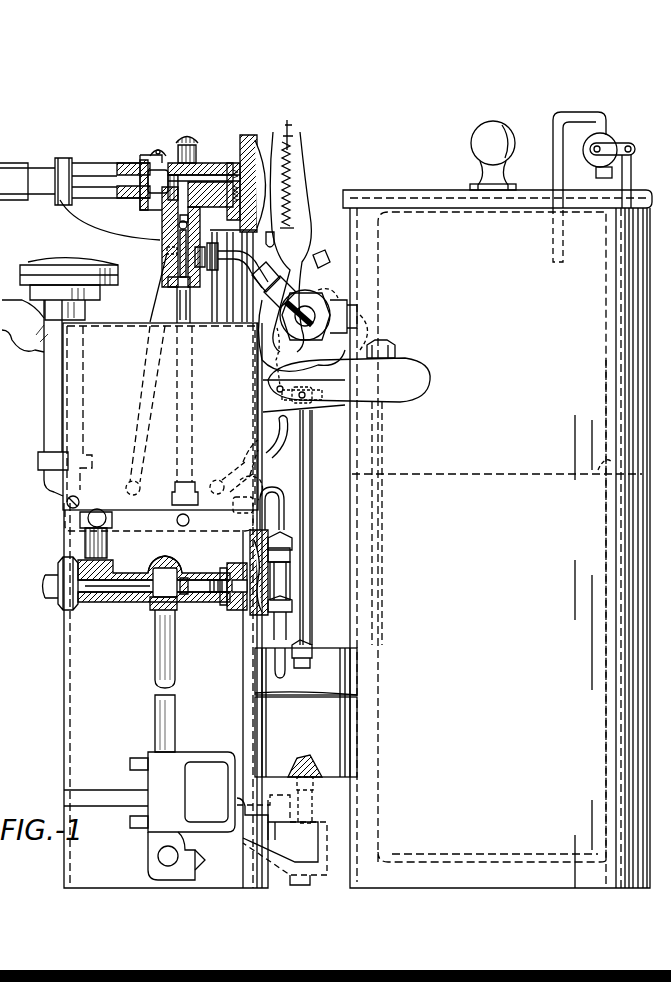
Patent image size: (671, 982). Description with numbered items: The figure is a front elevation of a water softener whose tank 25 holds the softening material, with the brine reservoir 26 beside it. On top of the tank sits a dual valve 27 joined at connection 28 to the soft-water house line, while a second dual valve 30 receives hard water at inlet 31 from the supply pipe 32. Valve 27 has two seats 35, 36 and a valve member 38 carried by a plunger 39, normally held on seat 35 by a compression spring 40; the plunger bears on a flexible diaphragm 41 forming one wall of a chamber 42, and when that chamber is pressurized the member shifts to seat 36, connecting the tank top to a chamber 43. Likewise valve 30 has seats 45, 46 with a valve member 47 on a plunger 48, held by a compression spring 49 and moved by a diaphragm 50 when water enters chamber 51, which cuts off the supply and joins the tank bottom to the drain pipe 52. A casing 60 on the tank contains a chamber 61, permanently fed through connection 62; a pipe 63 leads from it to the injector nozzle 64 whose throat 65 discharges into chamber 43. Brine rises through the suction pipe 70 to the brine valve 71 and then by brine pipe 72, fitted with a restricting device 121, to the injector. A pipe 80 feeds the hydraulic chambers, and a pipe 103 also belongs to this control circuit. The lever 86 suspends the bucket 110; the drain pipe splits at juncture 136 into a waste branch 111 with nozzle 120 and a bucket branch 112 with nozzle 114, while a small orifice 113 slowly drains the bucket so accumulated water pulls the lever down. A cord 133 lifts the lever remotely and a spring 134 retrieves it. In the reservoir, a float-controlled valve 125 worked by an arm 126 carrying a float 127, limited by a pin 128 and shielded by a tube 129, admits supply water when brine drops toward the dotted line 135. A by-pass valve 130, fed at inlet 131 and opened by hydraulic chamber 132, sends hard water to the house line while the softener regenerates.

The tank 25 is at (70, 650).
The reservoir 26 is at (385, 215).
The dual valve 27 is at (101, 168).
The connection 28 is at (56, 170).
The dual valve 30 is at (120, 602).
The hard water inlet 31 is at (88, 602).
The supply pipe 32 is at (598, 178).
The valve seat 35 is at (155, 198).
The valve seat 36 is at (136, 205).
The valve member 38 is at (158, 150).
The plunger 39 is at (205, 175).
The compression spring 40 is at (232, 205).
The flexible diaphragm 41 is at (252, 196).
The chamber 42 is at (274, 145).
The chamber 43 is at (182, 190).
The valve seat 45 is at (163, 674).
The valve seat 46 is at (152, 578).
The valve member 47 is at (180, 556).
The plunger 48 is at (212, 602).
The compression spring 49 is at (222, 578).
The diaphragm 50 is at (268, 538).
The chamber 51 is at (292, 552).
The drain pipe 52 is at (186, 578).
The casing 60 is at (75, 396).
The chamber 61 is at (70, 507).
The connection 62 is at (84, 548).
The pipe 63 is at (191, 310).
The nozzle 64 is at (170, 255).
The throat 65 is at (190, 221).
The suction pipe 70 is at (355, 452).
The brine valve 71 is at (345, 283).
The brine pipe 72 is at (250, 258).
The pipe 80 is at (160, 250).
The lever 86 is at (395, 400).
The pipe 103 is at (182, 190).
The bucket 110 is at (330, 655).
The waste branch 111 is at (278, 490).
The bucket branch 112 is at (288, 626).
The orifice 113 is at (300, 760).
The nozzle 114 is at (282, 672).
The nozzle 120 is at (164, 504).
The restricting device 121 is at (272, 335).
The float-controlled valve 125 is at (592, 158).
The arm 126 is at (626, 143).
The float 127 is at (610, 468).
The pin 128 is at (612, 136).
The tube 129 is at (605, 602).
The by-pass valve 130 is at (46, 377).
The inlet 131 is at (108, 525).
The hydraulic chamber 132 is at (56, 262).
The cord 133 is at (293, 218).
The spring 134 is at (292, 170).
The dotted line 135 is at (486, 478).
The juncture 136 is at (292, 582).